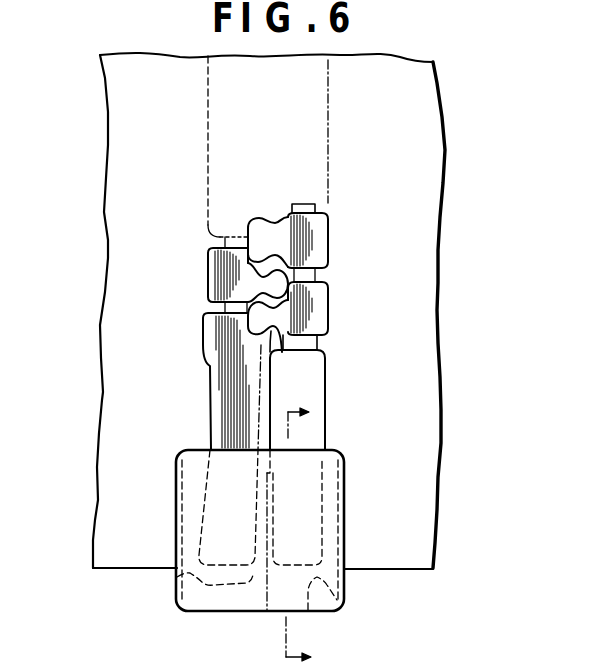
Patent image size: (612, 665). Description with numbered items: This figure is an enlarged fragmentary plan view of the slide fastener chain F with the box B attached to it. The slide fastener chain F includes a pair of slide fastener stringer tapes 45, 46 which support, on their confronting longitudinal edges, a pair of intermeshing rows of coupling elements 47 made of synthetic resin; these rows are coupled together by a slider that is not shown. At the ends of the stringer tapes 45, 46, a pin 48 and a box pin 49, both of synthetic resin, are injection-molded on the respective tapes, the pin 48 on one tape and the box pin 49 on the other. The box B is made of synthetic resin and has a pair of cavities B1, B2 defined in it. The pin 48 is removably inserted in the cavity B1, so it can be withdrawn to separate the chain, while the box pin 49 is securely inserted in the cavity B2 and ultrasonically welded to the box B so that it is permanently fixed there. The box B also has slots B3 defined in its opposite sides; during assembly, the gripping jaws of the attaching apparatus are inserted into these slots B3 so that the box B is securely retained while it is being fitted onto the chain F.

The slide fastener chain F is at (441, 182).
The slide fastener stringer tape 45 is at (116, 258).
The slide fastener stringer tape 46 is at (423, 336).
The coupling elements 47 is at (215, 270).
The pin 48 is at (218, 406).
The box pin 49 is at (312, 369).
The box B is at (197, 597).
The cavity B1 is at (190, 574).
The cavity B2 is at (340, 610).
The slots B3 is at (178, 494).